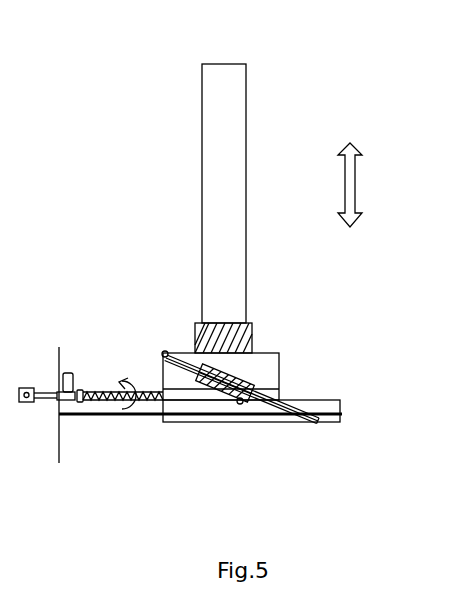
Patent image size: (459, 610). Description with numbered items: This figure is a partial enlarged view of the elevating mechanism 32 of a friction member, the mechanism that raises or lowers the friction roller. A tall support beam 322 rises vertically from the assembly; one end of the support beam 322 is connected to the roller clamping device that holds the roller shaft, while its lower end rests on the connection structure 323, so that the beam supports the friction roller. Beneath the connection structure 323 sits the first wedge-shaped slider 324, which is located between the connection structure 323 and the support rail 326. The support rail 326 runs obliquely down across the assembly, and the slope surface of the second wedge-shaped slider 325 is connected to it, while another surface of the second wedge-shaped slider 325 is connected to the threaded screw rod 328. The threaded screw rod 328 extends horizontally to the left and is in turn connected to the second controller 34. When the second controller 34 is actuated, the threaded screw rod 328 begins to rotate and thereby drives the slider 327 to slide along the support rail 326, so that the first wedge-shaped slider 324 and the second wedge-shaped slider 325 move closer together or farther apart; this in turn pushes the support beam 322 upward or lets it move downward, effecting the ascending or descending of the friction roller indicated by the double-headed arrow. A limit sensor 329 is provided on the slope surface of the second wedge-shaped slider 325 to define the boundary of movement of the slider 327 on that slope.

The elevating mechanism 32 is at (48, 94).
The second controller 34 is at (23, 388).
The support beam 322 is at (246, 222).
The connection structure 323 is at (252, 323).
The first wedge-shaped slider 324 is at (277, 358).
The second wedge-shaped slider 325 is at (272, 423).
The support rail 326 is at (280, 393).
The slider 327 is at (203, 368).
The threaded screw rod 328 is at (111, 385).
The limit sensor 329 is at (318, 421).